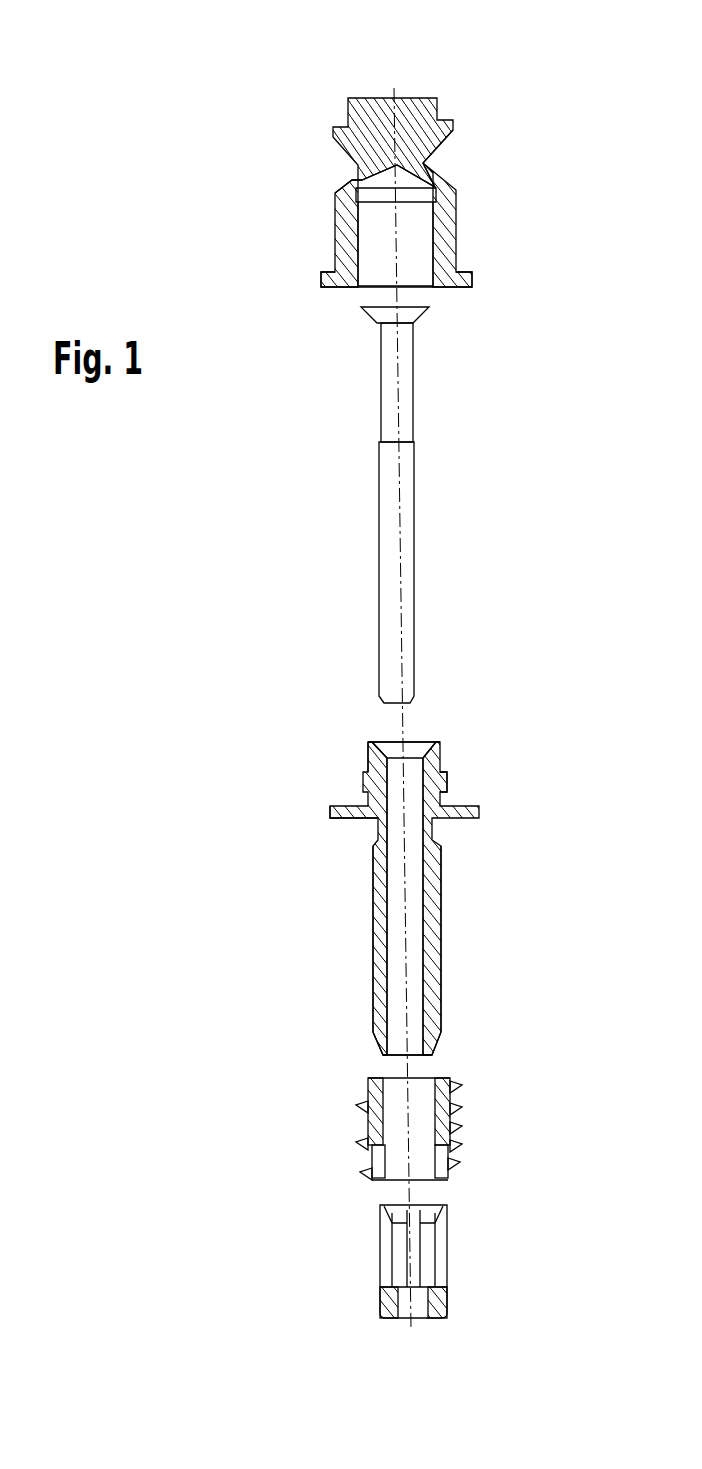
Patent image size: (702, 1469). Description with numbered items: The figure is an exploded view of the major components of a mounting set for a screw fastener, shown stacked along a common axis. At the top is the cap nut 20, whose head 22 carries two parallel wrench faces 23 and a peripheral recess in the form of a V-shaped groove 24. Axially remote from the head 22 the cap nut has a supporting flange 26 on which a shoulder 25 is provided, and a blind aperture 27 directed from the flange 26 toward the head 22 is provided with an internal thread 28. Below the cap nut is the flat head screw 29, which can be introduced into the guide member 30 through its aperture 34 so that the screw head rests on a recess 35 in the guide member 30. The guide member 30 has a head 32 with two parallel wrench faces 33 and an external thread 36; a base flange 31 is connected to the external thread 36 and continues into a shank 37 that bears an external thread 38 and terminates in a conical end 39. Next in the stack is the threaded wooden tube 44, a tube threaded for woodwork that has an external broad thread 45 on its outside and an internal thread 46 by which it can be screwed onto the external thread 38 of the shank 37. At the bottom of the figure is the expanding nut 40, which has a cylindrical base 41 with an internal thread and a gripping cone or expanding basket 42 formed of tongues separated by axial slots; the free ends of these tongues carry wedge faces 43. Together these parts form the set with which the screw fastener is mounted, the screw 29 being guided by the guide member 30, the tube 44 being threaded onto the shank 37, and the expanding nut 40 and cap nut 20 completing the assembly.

The cap nut 20 is at (210, 24).
The head 22 is at (430, 84).
The wrench faces 23 is at (437, 110).
The V-shaped groove 24 is at (442, 160).
The shoulder 25 is at (333, 270).
The supporting flange 26 is at (472, 277).
The blind aperture 27 is at (357, 178).
The internal thread 28 is at (440, 223).
The flat head screw 29 is at (379, 489).
The guide member 30 is at (390, 873).
The base flange 31 is at (479, 810).
The head 32 is at (345, 713).
The wrench faces 33 is at (368, 746).
The aperture 34 is at (417, 880).
The recess 35 is at (425, 740).
The external thread 36 is at (447, 780).
The shank 37 is at (385, 918).
The external thread 38 is at (375, 980).
The conical end 39 is at (443, 1042).
The expanding nut 40 is at (402, 1236).
The cylindrical base 41 is at (440, 1306).
The expanding basket 42 is at (466, 1246).
The wedge faces 43 is at (392, 1212).
The threaded wooden tube 44 is at (399, 1124).
The external broad thread 45 is at (368, 1140).
The internal thread 46 is at (451, 1109).